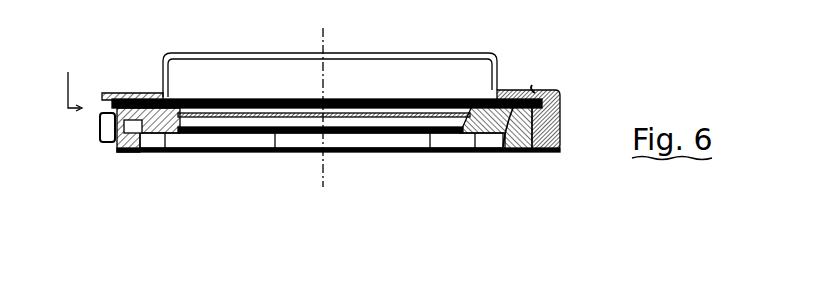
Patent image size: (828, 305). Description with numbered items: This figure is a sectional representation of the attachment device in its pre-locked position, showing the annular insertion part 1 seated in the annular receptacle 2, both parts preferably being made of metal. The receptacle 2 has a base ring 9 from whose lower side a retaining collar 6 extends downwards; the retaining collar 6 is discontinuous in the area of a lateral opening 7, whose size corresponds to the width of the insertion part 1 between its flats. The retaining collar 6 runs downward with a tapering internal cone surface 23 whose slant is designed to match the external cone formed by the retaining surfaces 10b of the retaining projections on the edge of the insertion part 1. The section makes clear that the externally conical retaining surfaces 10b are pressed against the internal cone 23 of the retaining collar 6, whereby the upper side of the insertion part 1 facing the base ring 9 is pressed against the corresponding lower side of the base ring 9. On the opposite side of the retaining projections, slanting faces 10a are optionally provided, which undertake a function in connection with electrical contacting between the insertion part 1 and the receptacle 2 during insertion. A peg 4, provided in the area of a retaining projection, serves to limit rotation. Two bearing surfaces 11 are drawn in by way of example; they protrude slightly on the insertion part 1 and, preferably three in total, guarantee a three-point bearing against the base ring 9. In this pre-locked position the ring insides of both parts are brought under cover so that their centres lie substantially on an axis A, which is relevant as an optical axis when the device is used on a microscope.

The insertion part 1 is at (454, 144).
The receptacle 2 is at (560, 88).
The peg 4 is at (112, 146).
The retaining collar 6 is at (542, 127).
The lateral opening 7 is at (73, 79).
The base ring 9 is at (500, 88).
The slanting faces 10a is at (103, 108).
The retaining surfaces 10b is at (118, 143).
The bearing surfaces 11 is at (146, 97).
The internal cone surface 23 is at (557, 148).
The axis A is at (325, 33).